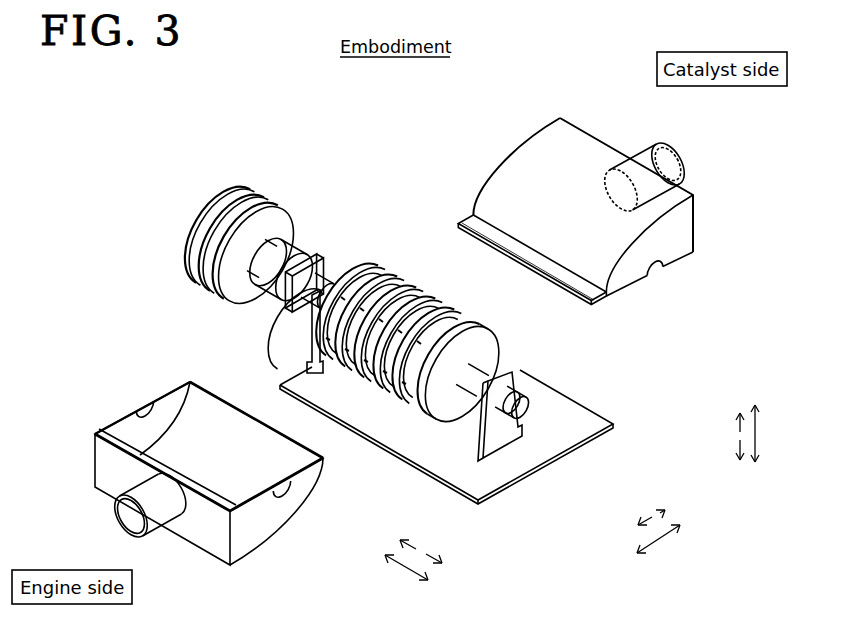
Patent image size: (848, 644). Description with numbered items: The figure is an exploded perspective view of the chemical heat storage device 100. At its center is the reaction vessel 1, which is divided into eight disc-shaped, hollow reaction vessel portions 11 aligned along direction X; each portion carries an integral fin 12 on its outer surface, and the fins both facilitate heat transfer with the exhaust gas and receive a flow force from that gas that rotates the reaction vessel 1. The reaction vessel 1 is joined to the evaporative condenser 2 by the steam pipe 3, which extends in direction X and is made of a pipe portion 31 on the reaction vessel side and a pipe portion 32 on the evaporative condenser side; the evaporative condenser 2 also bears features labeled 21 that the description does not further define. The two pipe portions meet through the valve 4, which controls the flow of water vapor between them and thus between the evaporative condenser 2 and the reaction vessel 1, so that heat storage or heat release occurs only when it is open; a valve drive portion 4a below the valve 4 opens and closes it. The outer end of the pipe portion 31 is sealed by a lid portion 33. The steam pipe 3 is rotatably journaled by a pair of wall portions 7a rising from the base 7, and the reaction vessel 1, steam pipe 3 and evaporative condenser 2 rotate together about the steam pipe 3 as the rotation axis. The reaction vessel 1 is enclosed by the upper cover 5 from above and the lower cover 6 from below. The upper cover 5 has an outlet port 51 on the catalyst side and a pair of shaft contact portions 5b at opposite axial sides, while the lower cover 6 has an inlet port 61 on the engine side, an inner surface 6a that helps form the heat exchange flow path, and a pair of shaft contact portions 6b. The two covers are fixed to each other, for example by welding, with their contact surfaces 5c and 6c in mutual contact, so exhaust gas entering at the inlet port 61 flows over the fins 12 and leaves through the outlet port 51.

The chemical heat storage device 100 is at (112, 150).
The reaction vessel 1 is at (396, 190).
The reaction vessel portion 11 is at (480, 325).
The fin 12 is at (420, 410).
The evaporative condenser 2 is at (246, 140).
The bellows ridge 21 is at (228, 190).
The steam pipe 3 is at (422, 305).
The pipe portion 31 is at (500, 357).
The pipe portion 32 is at (315, 252).
The lid portion 33 is at (527, 412).
The valve 4 is at (318, 254).
The valve drive portion 4a is at (275, 338).
The upper cover 5 is at (538, 147).
The outlet port 51 is at (668, 146).
The shaft contact portion 5b is at (663, 270).
The contact surface 5c is at (612, 300).
The lower cover 6 is at (265, 548).
The inner surface 6a is at (205, 410).
The shaft contact portion 6b is at (145, 404).
The contact surface 6c is at (99, 432).
The inlet port 61 is at (128, 520).
The base 7 is at (590, 410).
The wall portion 7a is at (318, 292).